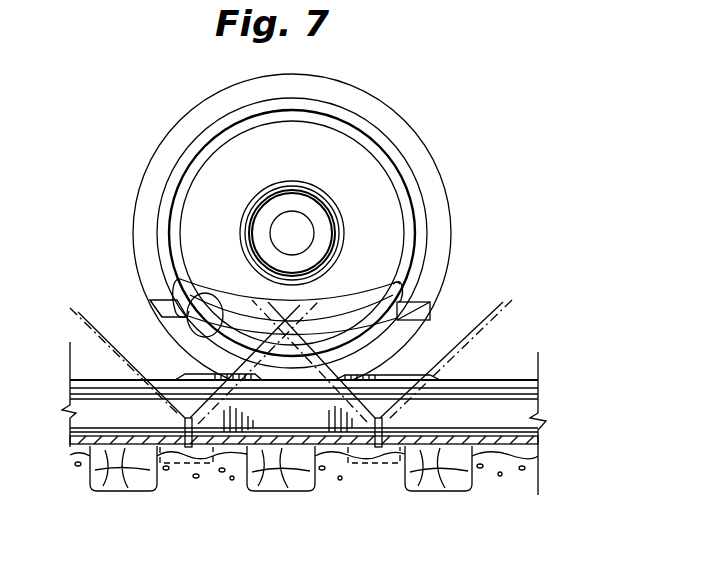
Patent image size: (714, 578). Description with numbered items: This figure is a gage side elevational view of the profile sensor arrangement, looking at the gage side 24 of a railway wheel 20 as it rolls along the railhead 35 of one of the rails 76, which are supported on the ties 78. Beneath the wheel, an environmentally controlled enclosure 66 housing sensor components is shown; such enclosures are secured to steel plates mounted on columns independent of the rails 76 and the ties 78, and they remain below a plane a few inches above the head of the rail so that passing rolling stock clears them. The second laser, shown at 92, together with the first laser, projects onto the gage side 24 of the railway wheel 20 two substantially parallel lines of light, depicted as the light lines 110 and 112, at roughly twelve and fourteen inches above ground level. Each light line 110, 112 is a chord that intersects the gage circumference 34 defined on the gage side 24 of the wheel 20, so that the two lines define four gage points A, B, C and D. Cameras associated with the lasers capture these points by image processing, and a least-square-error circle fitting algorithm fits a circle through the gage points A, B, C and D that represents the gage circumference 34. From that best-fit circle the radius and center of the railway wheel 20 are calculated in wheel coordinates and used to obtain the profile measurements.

The railway wheel 20 is at (164, 144).
The gage side 24 is at (308, 168).
The gage circumference 34 is at (415, 175).
The railhead 35 is at (515, 383).
The rails 76 is at (540, 433).
The environmentally controlled enclosure 66 is at (303, 470).
The ties 78 is at (310, 492).
The laser 2 92 is at (280, 453).
The light line 110 is at (167, 338).
The light line 112 is at (178, 290).
The gage point A is at (150, 293).
The gage point B is at (155, 310).
The gage point C is at (402, 289).
The gage point D is at (431, 311).